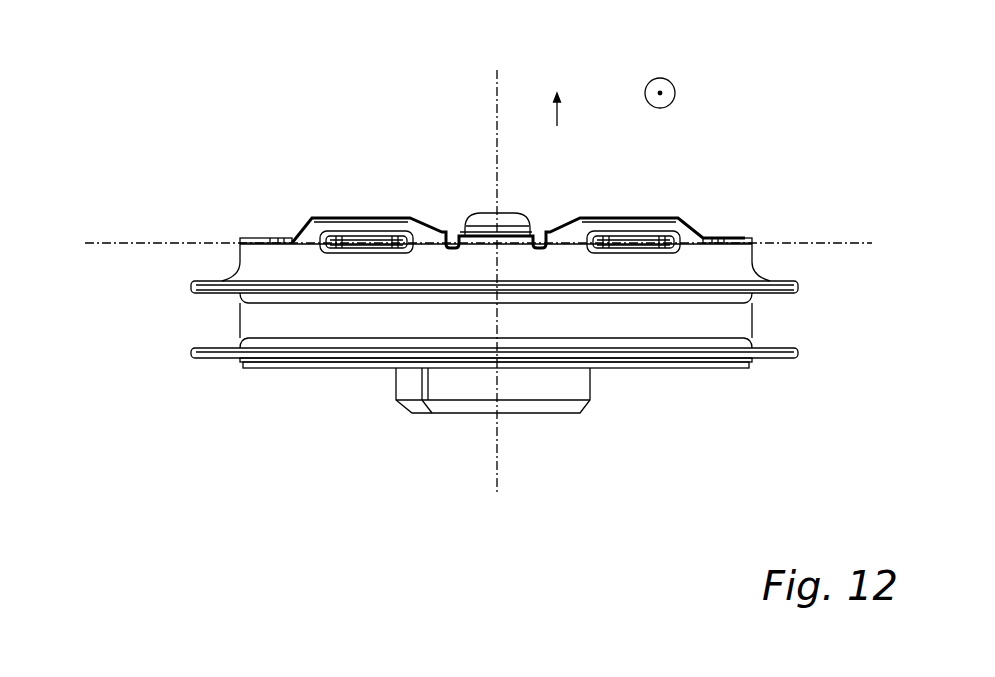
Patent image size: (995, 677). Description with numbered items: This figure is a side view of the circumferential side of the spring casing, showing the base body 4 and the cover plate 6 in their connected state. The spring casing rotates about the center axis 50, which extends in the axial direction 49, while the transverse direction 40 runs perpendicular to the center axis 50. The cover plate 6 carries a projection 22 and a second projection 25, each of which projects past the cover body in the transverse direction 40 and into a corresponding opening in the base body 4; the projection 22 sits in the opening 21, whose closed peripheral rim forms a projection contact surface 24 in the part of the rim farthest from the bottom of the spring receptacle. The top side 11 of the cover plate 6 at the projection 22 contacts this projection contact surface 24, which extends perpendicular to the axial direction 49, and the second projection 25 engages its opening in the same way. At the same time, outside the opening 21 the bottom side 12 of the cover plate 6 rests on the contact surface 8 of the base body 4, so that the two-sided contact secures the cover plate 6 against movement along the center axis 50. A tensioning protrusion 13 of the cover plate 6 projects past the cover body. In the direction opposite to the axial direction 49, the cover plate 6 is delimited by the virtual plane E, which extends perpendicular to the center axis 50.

The base body 4 is at (297, 222).
The cover plate 6 is at (744, 236).
The contact surface 8 is at (486, 233).
The top side 11 is at (729, 235).
The bottom side 12 is at (726, 250).
The tensioning protrusion 13 is at (528, 233).
The opening 21 is at (336, 258).
The projection 22 is at (363, 214).
The projection contact surface 24 is at (364, 246).
The second projection 25 is at (620, 236).
The transverse direction 40 is at (672, 81).
The axial direction 49 is at (558, 112).
The center axis 50 is at (497, 80).
The virtual plane E is at (853, 244).